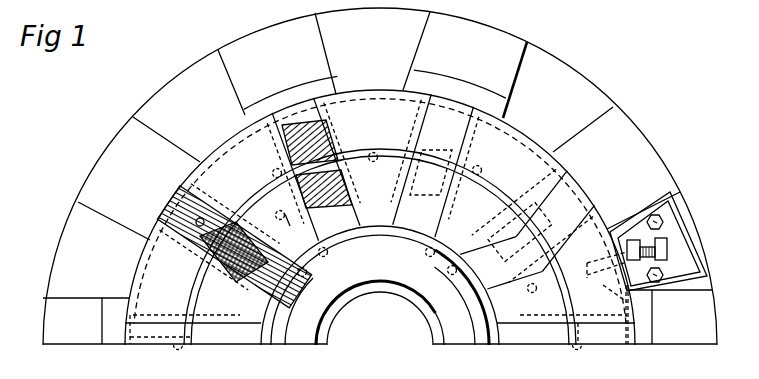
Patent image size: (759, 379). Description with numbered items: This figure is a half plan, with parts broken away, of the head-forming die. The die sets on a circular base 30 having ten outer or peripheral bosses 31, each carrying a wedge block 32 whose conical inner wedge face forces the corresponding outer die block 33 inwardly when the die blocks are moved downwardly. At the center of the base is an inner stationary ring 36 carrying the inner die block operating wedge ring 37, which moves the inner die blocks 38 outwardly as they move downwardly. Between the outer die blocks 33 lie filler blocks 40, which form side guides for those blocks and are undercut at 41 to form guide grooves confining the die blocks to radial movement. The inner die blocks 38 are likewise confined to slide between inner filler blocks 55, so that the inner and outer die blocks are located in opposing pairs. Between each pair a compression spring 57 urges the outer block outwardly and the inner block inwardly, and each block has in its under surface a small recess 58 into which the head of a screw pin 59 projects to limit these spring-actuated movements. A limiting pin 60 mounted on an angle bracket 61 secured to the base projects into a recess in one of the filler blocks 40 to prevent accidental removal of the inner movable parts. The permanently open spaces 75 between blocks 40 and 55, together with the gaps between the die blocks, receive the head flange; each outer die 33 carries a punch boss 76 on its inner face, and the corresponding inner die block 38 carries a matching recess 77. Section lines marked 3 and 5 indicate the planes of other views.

The circular base 30 is at (602, 77).
The outer or peripheral bosses 31 is at (377, 178).
The wedge block 32 is at (258, 104).
The outer die blocks 33 is at (380, 217).
The inner stationary ring 36 is at (452, 343).
The inner die block operating wedge ring 37 is at (485, 340).
The inner die blocks 38 is at (310, 288).
The filler blocks 40 is at (378, 221).
The undercut 41 is at (523, 202).
The filler blocks 55 is at (378, 251).
The compression spring 57 is at (285, 220).
The recess 58 is at (258, 212).
The screw pin 59 is at (198, 222).
The limiting pins 60 is at (618, 302).
The angle brackets 61 is at (680, 268).
The permanently open spaces 75 is at (262, 172).
The punch boss 76 is at (333, 148).
The recess 77 is at (329, 168).
The section line 3 is at (405, 152).
The bolt / section line 5 is at (713, 228).